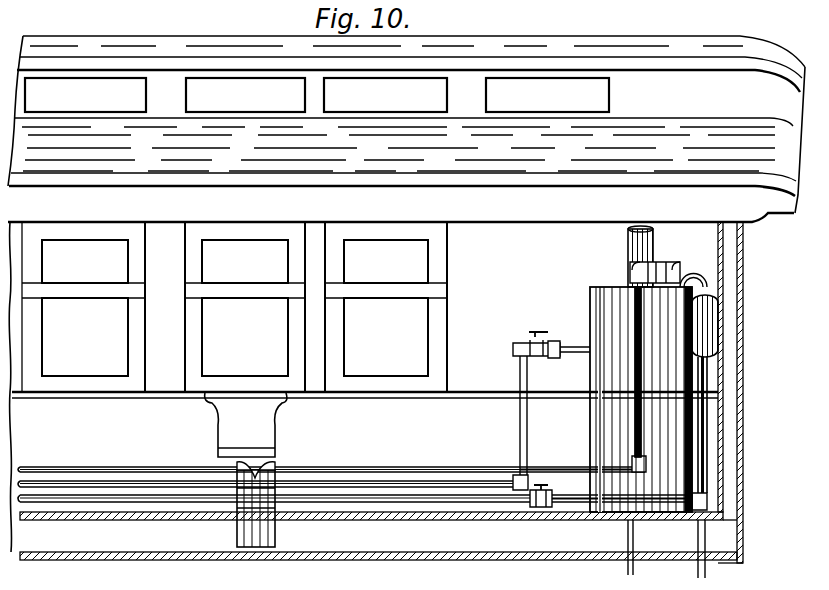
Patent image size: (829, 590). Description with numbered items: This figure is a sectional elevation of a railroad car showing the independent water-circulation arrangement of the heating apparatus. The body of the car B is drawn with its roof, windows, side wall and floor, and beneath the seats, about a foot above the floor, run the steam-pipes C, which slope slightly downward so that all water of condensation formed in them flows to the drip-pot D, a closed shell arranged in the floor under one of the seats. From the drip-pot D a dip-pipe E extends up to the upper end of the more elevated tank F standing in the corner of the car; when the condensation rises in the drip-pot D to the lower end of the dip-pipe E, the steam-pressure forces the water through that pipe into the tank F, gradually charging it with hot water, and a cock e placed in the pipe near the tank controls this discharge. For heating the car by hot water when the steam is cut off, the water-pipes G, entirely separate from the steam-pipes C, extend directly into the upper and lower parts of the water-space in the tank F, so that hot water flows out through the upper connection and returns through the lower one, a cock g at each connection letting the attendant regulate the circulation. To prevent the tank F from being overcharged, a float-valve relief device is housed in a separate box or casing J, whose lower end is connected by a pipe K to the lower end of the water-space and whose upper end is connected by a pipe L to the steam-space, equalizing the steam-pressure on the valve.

The body of the car B is at (406, 299).
The steam-pipes C is at (274, 474).
The drip-pot D is at (274, 541).
The dip-pipe E is at (549, 379).
The tank F is at (588, 289).
The water-pipes G is at (360, 495).
The box or casing J is at (723, 323).
The pipe K is at (708, 442).
The pipe L is at (693, 265).
The cock e is at (654, 256).
The cock g is at (550, 487).